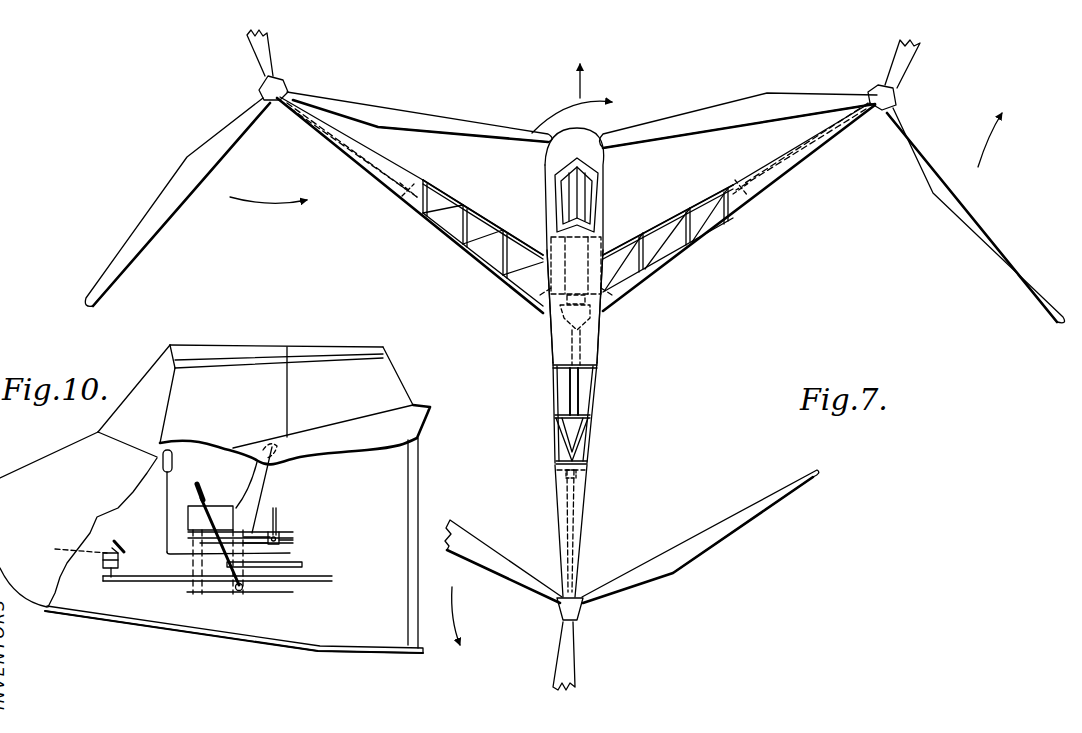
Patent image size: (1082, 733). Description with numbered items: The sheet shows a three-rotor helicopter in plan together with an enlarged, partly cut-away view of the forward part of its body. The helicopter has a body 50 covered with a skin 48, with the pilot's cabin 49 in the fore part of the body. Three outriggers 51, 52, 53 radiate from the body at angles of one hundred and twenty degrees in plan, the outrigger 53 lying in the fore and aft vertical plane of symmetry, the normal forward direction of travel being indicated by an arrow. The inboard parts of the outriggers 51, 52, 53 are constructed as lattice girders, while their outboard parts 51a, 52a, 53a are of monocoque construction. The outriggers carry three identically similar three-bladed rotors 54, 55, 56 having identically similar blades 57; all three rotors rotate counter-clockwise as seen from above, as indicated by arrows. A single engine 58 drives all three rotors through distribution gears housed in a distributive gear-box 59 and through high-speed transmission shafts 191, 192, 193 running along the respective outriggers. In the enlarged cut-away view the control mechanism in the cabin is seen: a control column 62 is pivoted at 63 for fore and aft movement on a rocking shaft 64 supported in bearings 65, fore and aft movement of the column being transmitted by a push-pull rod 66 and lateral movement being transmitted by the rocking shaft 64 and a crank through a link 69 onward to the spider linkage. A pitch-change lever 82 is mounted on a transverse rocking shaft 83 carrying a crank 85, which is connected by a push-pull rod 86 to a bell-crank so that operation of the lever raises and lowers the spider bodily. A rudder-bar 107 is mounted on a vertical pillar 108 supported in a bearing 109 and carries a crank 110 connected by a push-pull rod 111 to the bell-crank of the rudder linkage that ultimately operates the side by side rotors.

In FIG. 7, the skin 48 is at (600, 347).
In FIG. 7, the pilot's cabin 49 is at (577, 190).
In FIG. 10, the pilot's cabin 49 is at (223, 373).
In FIG. 7, the body 50 is at (592, 335).
In FIG. 10, the body 50 is at (387, 657).
In FIG. 7, the outrigger 51 is at (452, 242).
In FIG. 7, the outboard part of outrigger 51a is at (312, 133).
In FIG. 7, the outrigger 52 is at (715, 233).
In FIG. 7, the outboard part of outrigger 52a is at (813, 160).
In FIG. 7, the outrigger 53 is at (592, 440).
In FIG. 7, the outboard part of outrigger 53a is at (587, 510).
In FIG. 7, the rotor 54 is at (248, 89).
In FIG. 7, the rotor 55 is at (898, 100).
In FIG. 7, the rotor 56 is at (586, 612).
In FIG. 7, the blades 57 is at (150, 225).
In FIG. 7, the engine 58 is at (606, 228).
In FIG. 7, the distributive gear-box 59 is at (558, 318).
In FIG. 10, the control column 62 is at (163, 463).
In FIG. 10, the pivot 63 is at (190, 533).
In FIG. 10, the rocking shaft 64 is at (250, 537).
In FIG. 10, the bearings 65 is at (280, 540).
In FIG. 10, the push-pull rod 66 is at (290, 553).
In FIG. 10, the link 69 is at (278, 513).
In FIG. 10, the pitch-change lever 82 is at (198, 483).
In FIG. 10, the transverse rocking shaft 83 is at (243, 590).
In FIG. 10, the crank 85 is at (240, 566).
In FIG. 10, the push-pull rod 86 is at (302, 564).
In FIG. 10, the rudder-bar 107 is at (112, 549).
In FIG. 10, the vertical pillar 108 is at (66, 551).
In FIG. 10, the bearing 109 is at (119, 560).
In FIG. 10, the crank 110 is at (108, 578).
In FIG. 10, the push-pull rod 111 is at (332, 577).
In FIG. 7, the high-speed transmission shaft 191 is at (493, 229).
In FIG. 7, the high-speed transmission shaft 192 is at (692, 212).
In FIG. 7, the high-speed transmission shaft 193 is at (578, 387).